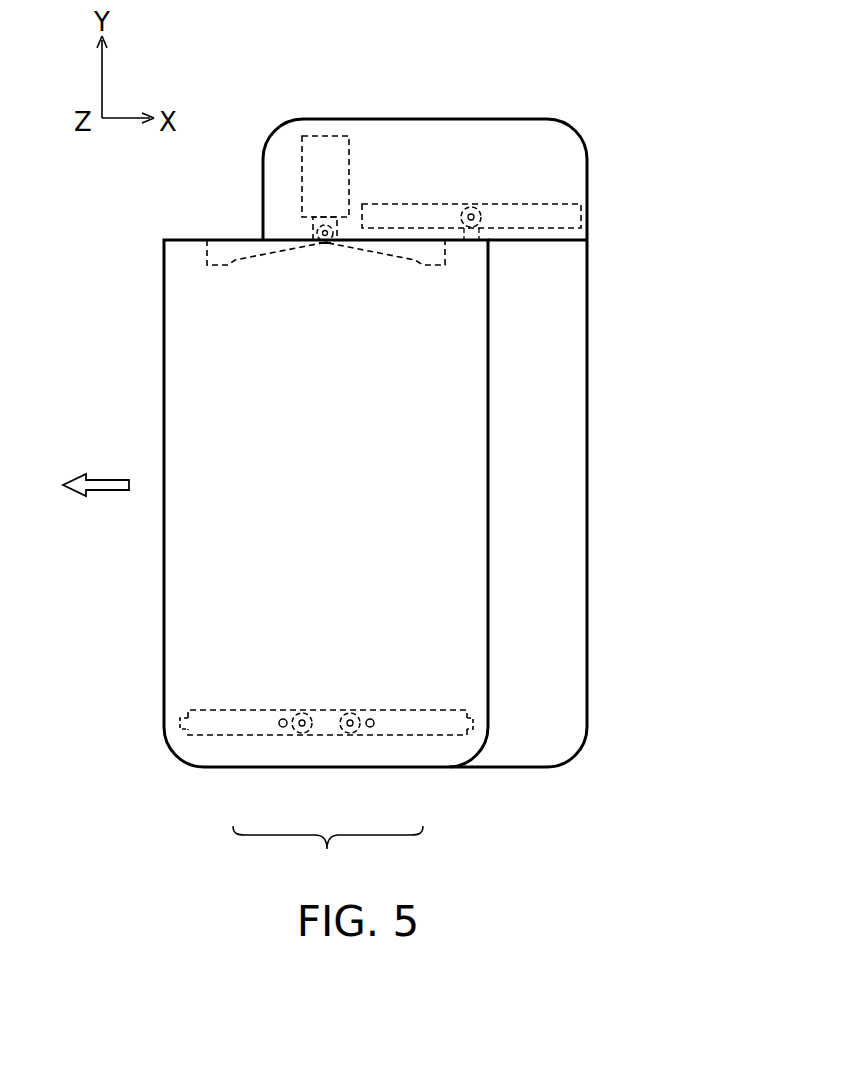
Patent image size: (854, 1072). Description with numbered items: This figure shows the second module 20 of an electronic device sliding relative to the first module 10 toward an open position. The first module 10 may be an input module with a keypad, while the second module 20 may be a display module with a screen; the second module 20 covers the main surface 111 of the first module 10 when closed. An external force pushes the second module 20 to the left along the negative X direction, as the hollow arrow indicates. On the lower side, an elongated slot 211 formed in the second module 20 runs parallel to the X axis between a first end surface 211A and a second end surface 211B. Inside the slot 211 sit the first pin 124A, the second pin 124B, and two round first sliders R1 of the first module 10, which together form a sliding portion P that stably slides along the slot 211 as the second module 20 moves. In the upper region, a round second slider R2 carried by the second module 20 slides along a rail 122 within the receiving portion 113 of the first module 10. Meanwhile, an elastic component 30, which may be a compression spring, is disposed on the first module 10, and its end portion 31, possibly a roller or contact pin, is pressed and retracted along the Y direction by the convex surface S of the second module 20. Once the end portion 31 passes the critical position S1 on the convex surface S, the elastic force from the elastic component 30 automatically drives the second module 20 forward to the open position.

The first module 10 is at (574, 128).
The receiving portion 113 is at (573, 173).
The main surface 111 is at (573, 443).
The second module 20 is at (164, 362).
The elastic component 30 is at (324, 134).
The end portion 31 is at (316, 233).
The rail 122 is at (407, 213).
The second slider R2 is at (468, 207).
The convex surface S is at (262, 252).
The critical position S1 is at (325, 244).
The slot 211 is at (440, 720).
The first end surface 211A is at (180, 723).
The second end surface 211B is at (473, 724).
The first pin 124A is at (283, 730).
The second pin 124B is at (370, 730).
The first sliders R1 is at (302, 734).
The sliding portion P is at (328, 854).